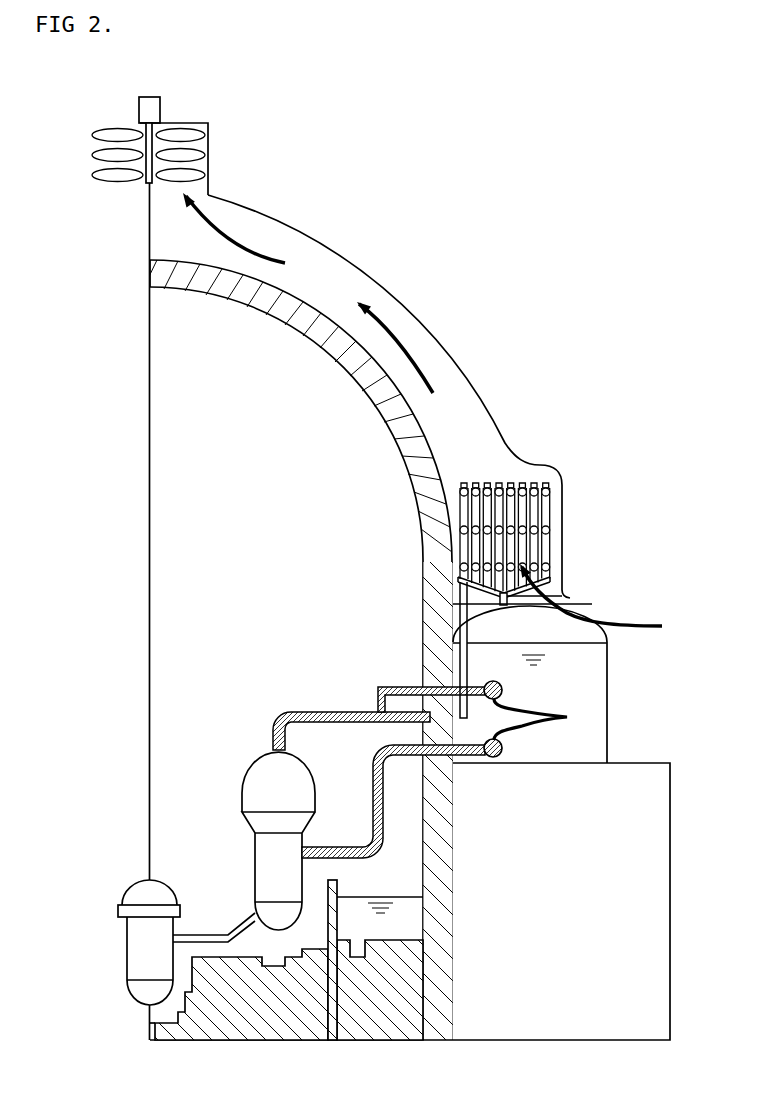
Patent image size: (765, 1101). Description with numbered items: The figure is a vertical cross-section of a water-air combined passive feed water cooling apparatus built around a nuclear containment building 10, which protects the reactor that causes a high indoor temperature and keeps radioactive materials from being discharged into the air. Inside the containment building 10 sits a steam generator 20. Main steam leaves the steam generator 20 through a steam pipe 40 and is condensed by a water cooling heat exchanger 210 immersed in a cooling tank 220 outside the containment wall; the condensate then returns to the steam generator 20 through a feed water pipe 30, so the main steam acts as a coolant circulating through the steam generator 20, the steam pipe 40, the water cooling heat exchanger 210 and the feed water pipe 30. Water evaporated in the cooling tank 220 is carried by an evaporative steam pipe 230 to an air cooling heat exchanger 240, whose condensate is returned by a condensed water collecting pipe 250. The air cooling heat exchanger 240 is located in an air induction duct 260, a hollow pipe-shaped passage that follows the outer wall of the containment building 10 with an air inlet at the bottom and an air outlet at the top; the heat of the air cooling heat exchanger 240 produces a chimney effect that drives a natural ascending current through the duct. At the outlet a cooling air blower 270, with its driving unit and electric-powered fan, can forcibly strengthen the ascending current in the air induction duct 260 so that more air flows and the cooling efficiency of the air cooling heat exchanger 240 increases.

The containment building 10 is at (292, 358).
The steam generator 20 is at (255, 773).
The feed water pipe 30 is at (375, 757).
The steam pipe 40 is at (392, 687).
The water cooling heat exchanger 210 is at (567, 717).
The cooling tank 220 is at (583, 687).
The evaporative steam pipe 230 is at (555, 603).
The air cooling heat exchanger 240 is at (547, 507).
The condensed water collecting pipe 250 is at (453, 639).
The air induction duct 260 is at (460, 407).
The cooling air blower 270 is at (197, 157).